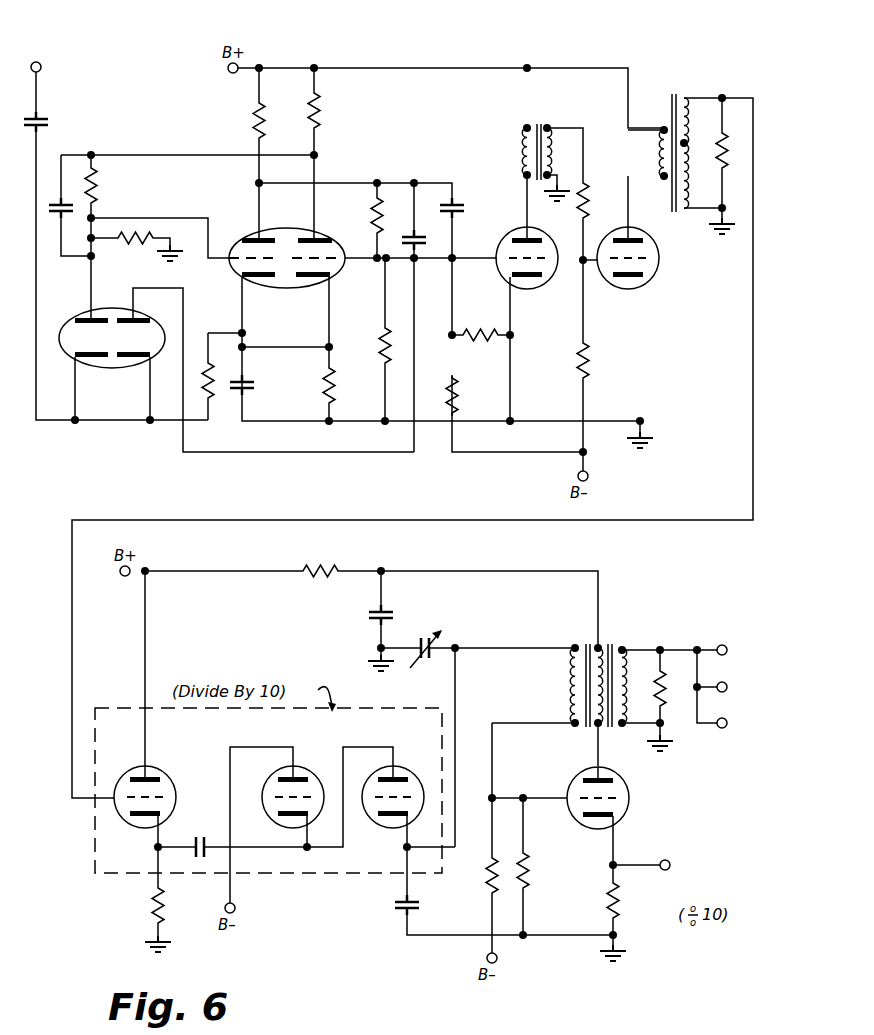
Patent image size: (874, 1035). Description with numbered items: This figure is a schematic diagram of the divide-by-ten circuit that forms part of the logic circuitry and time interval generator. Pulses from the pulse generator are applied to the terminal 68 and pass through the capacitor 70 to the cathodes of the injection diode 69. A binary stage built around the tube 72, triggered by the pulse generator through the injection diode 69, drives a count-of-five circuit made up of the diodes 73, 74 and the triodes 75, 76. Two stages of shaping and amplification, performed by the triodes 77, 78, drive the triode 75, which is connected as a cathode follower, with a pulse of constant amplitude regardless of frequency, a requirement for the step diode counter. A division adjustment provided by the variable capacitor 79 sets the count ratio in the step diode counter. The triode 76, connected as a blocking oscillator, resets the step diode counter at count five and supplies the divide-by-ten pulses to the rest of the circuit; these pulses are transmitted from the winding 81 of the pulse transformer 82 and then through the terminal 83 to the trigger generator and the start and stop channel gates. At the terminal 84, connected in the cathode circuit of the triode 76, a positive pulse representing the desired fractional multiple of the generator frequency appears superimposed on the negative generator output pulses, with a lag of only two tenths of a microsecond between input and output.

The terminal 68 is at (38, 62).
The injection diode 69 is at (132, 374).
The capacitor 70 is at (50, 124).
The binary stage tube 72 is at (246, 224).
The diode 73 is at (396, 762).
The diode 74 is at (286, 766).
The triode 75 is at (148, 762).
The triode 76 is at (630, 780).
The triode 77 is at (506, 230).
The triode 78 is at (662, 264).
The variable capacitor 79 is at (426, 666).
The winding 81 is at (630, 668).
The pulse transformer 82 is at (586, 642).
The terminal 83 is at (730, 650).
The terminal 84 is at (665, 871).